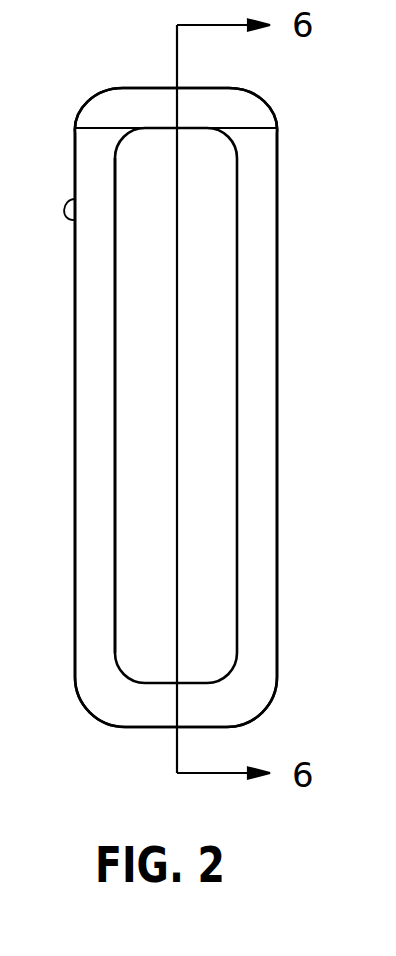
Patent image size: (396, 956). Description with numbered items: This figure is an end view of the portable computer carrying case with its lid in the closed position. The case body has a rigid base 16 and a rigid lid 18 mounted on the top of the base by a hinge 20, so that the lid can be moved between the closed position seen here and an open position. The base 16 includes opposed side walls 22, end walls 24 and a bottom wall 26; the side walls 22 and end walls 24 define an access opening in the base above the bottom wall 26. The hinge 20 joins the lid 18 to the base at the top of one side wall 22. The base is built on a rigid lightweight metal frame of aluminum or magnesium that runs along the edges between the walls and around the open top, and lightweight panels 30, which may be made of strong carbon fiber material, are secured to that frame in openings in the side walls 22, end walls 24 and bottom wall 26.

The rigid base 16 is at (290, 374).
The rigid lid 18 is at (275, 98).
The hinge 20 is at (69, 201).
The side walls 22 is at (74, 417).
The end walls 24 is at (208, 647).
The bottom wall 26 is at (137, 728).
The lightweight panels 30 is at (127, 529).